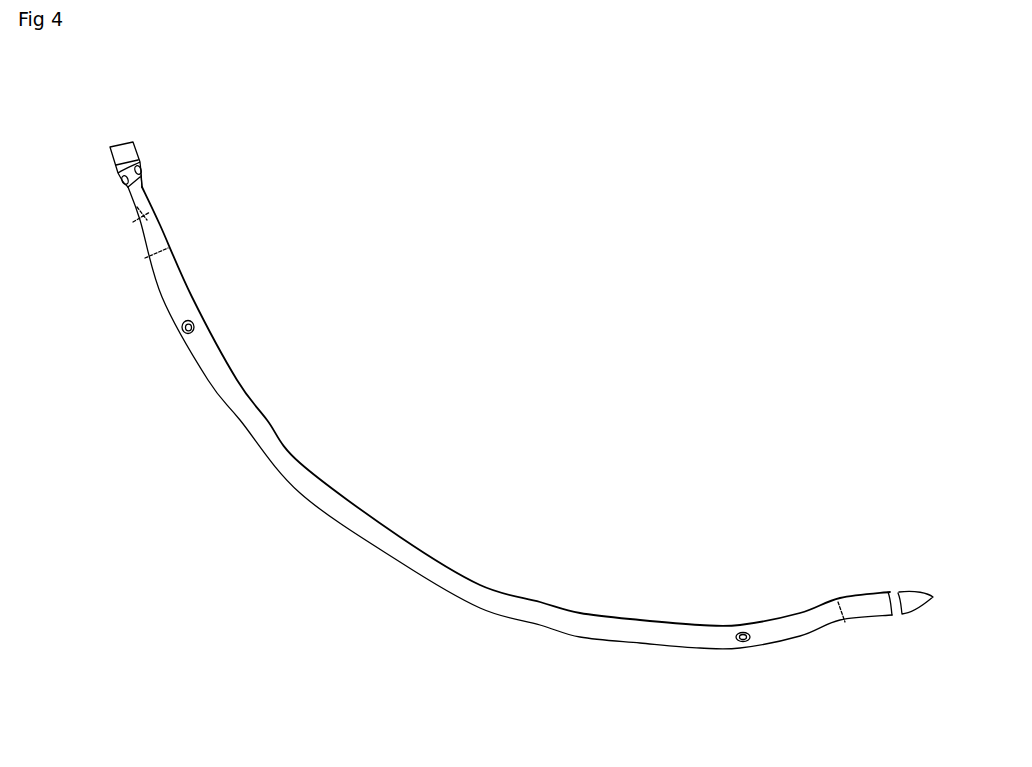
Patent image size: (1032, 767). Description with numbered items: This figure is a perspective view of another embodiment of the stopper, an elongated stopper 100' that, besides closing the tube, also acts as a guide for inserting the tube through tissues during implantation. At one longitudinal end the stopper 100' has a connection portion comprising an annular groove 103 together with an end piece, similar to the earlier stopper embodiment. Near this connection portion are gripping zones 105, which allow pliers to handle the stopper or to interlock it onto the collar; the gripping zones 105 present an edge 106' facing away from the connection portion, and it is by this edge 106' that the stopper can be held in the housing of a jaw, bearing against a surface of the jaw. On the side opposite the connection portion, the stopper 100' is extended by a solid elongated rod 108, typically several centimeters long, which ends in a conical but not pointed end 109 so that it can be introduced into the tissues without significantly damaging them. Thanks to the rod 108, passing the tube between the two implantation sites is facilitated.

The elongated stopper 100' is at (492, 351).
The annular groove 103 is at (119, 138).
The gripping zones 105 is at (128, 179).
The edge 106' is at (97, 231).
The elongated rod 108 is at (413, 558).
The conical end 109 is at (913, 590).